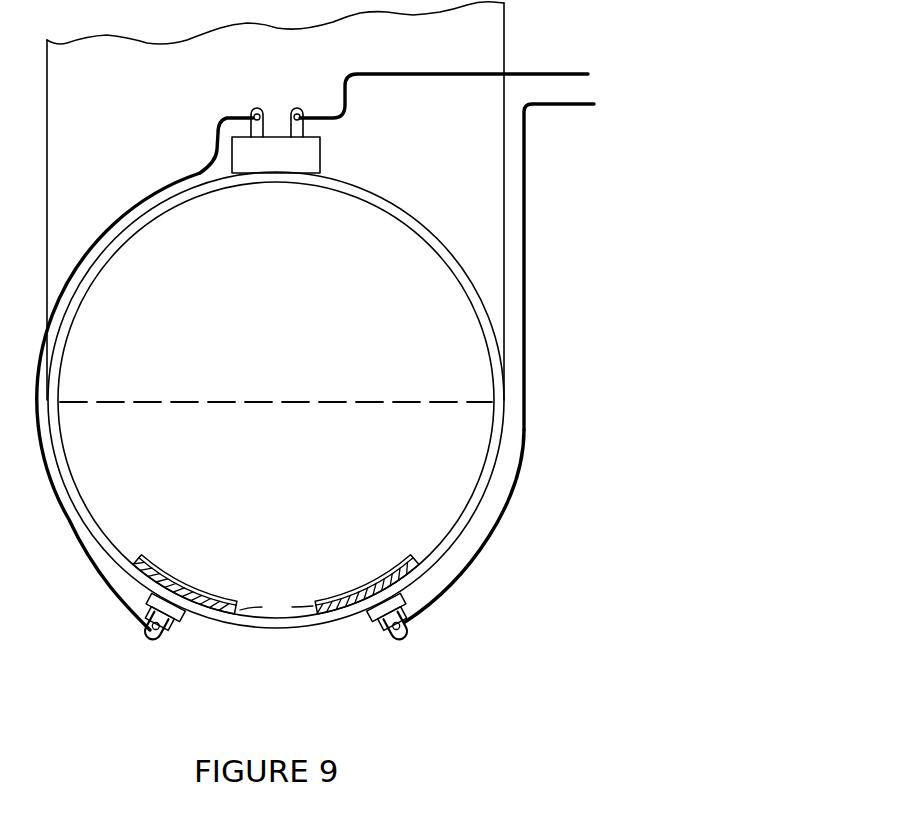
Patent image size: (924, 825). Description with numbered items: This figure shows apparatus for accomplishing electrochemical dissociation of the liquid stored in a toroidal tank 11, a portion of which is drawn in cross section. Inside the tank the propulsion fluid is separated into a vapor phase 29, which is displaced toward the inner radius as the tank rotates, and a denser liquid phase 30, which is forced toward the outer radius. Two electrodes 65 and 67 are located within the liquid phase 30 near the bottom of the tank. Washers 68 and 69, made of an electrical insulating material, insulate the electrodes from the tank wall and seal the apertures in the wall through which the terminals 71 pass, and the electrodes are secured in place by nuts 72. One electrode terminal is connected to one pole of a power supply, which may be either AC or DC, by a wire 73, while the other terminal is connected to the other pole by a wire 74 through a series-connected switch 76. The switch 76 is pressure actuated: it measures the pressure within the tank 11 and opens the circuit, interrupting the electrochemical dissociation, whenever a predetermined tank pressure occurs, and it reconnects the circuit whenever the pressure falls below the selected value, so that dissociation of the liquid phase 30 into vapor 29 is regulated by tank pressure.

The toroidal tank 11 is at (395, 203).
The vapor phase 29 is at (425, 321).
The liquid phase 30 is at (440, 444).
The electrode 65 is at (200, 588).
The electrode 67 is at (355, 590).
The washer 68 is at (276, 608).
The washer 69 is at (187, 613).
The terminal 71 is at (153, 633).
The nut 72 is at (181, 636).
The wire 73 is at (493, 525).
The wire 74 is at (107, 580).
The switch 76 is at (305, 148).